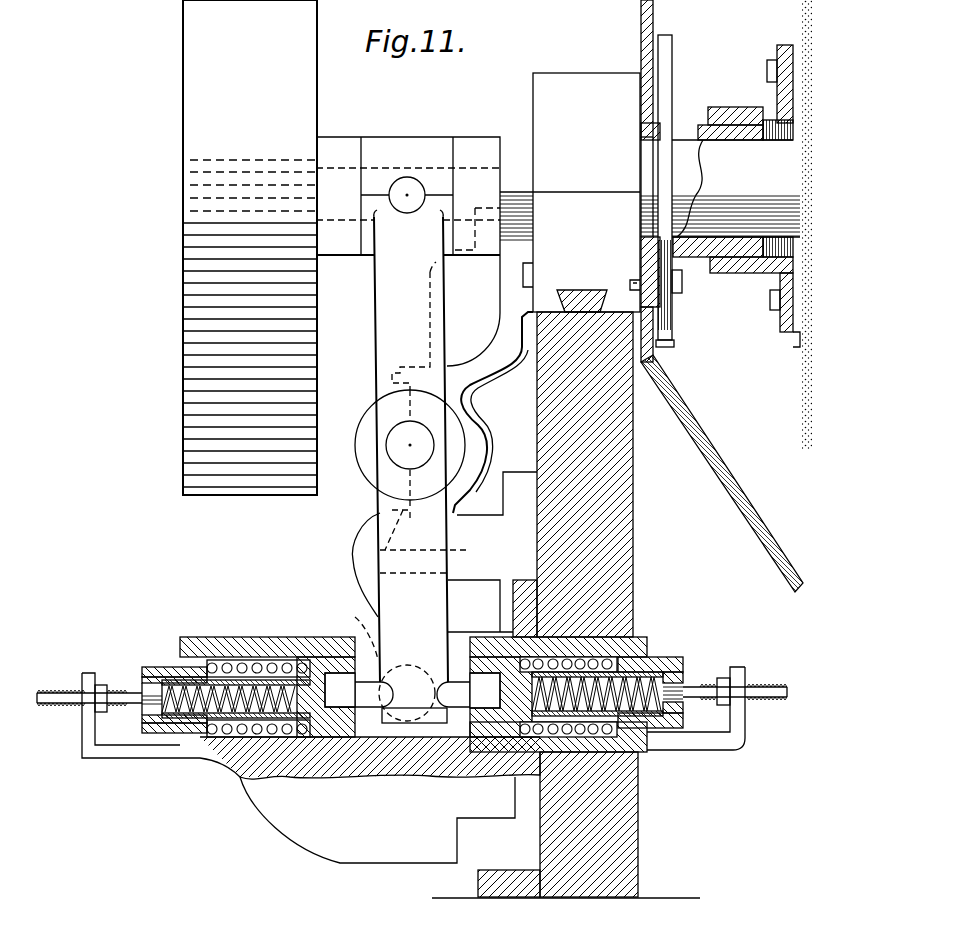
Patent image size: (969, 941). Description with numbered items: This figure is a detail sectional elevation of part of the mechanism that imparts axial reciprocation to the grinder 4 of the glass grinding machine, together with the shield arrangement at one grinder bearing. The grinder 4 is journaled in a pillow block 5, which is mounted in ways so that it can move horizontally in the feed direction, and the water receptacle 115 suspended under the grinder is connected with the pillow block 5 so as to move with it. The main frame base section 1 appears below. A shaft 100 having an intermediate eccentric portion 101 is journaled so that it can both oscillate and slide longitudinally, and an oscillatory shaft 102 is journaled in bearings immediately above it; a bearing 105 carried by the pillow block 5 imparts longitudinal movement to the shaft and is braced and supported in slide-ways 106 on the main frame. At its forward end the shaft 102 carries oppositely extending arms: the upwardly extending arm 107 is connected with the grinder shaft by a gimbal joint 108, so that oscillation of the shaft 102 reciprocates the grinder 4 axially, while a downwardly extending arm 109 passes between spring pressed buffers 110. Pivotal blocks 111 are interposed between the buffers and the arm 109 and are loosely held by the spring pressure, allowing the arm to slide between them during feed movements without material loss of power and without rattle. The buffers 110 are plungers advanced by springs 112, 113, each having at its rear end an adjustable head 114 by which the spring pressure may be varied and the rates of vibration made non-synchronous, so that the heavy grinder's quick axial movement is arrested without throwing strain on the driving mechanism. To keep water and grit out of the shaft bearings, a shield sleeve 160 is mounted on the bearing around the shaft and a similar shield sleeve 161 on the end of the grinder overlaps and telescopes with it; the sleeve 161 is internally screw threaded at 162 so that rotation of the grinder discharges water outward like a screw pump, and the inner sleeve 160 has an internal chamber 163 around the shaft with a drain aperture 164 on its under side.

The base section 1 is at (640, 805).
The grinder 4 is at (803, 428).
The pillow block 5 is at (586, 192).
The shaft 100 is at (372, 687).
The eccentric portion 101 is at (413, 680).
The oscillatory shaft 102 is at (397, 437).
The bearing 105 is at (493, 412).
The slide-ways 106 is at (600, 292).
The upwardly extending arm 107 is at (412, 446).
The gimbal joint 108 is at (372, 475).
The downwardly extending arm 109 is at (454, 606).
The spring pressed buffers 110 is at (485, 723).
The pivotal blocks 111 is at (303, 637).
The spring 112 is at (233, 657).
The spring 113 is at (170, 670).
The adjustable heads 114 is at (140, 693).
The water receptacle 115 is at (697, 420).
The shield sleeve 160 is at (688, 133).
The shield sleeve 161 is at (773, 107).
The screw threads 162 is at (745, 107).
The internal chamber 163 is at (720, 243).
The drain aperture 164 is at (690, 260).